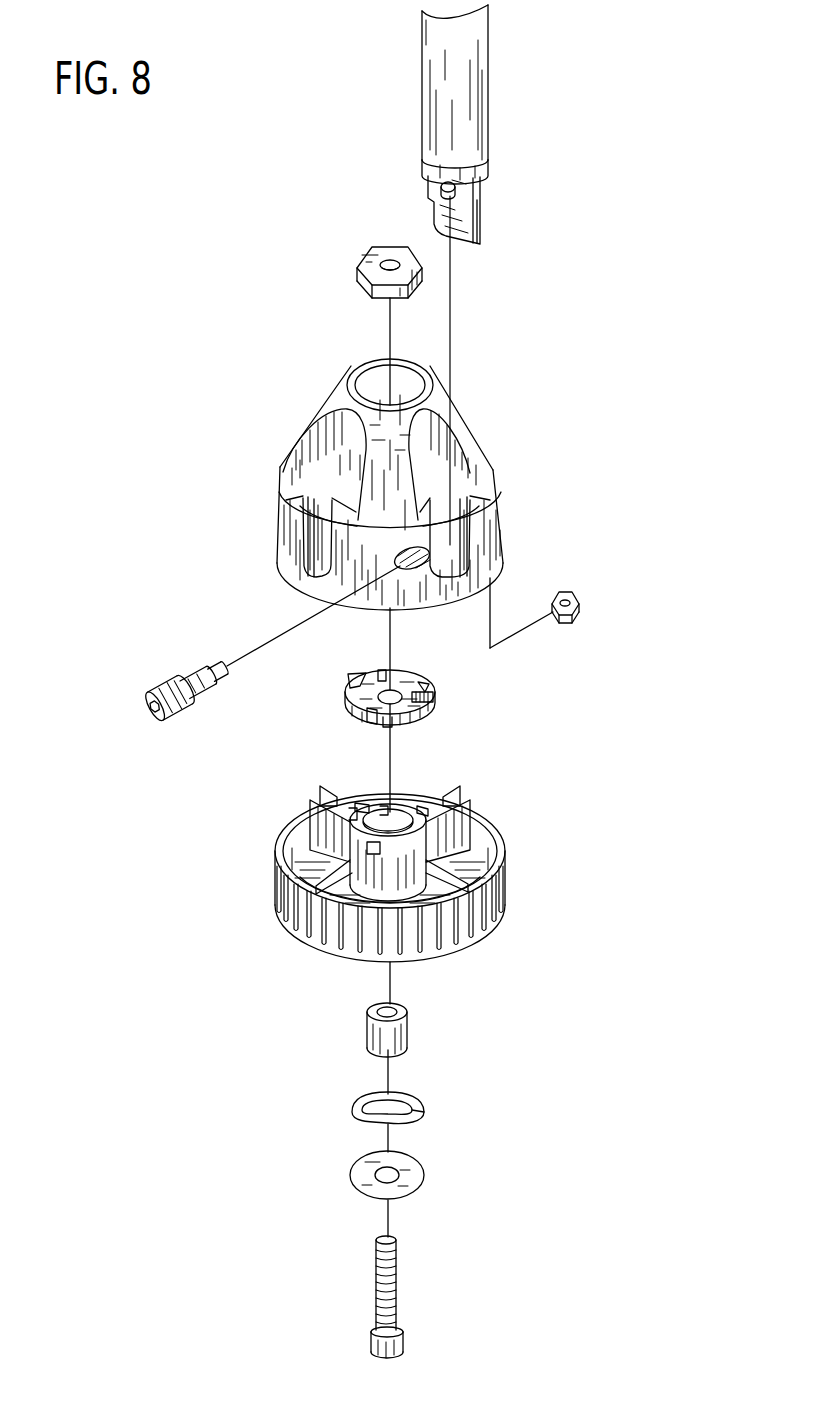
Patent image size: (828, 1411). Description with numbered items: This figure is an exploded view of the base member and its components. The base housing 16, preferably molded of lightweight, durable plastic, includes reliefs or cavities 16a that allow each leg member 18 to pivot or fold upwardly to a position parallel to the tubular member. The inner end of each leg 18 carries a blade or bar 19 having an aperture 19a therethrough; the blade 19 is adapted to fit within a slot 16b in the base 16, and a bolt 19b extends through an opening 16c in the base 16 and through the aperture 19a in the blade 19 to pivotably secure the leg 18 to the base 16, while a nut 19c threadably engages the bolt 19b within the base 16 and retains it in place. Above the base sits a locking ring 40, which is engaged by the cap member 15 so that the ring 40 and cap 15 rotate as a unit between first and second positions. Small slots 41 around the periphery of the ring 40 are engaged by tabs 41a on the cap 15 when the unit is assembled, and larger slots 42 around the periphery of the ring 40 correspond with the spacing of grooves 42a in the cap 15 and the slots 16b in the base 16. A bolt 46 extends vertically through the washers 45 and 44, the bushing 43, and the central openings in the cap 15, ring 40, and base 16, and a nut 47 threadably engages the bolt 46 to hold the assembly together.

The cap member 15 is at (419, 876).
The base housing 16 is at (375, 490).
The reliefs or cavities 16a is at (350, 432).
The slot 16b is at (470, 526).
The opening 16c is at (413, 567).
The leg member 18 is at (490, 124).
The blade or bar 19 is at (445, 211).
The aperture 19a is at (431, 192).
The bolt 19b is at (150, 702).
The nut 19c is at (582, 610).
The locking ring 40 is at (428, 697).
The small slots 41 is at (355, 681).
The larger slots 42 is at (381, 677).
The tabs 41a is at (365, 850).
The grooves 42a is at (381, 805).
The bushing 43 is at (408, 1030).
The washer 44 is at (425, 1113).
The washer 45 is at (425, 1175).
The bolt 46 is at (398, 1273).
The nut 47 is at (355, 271).